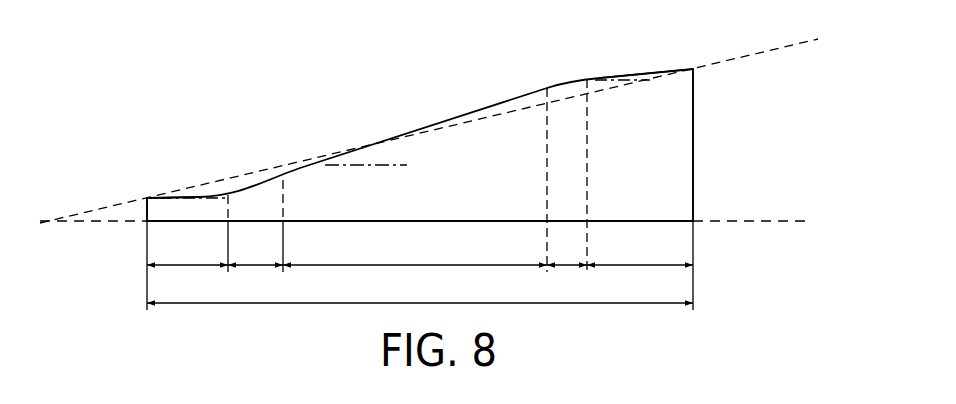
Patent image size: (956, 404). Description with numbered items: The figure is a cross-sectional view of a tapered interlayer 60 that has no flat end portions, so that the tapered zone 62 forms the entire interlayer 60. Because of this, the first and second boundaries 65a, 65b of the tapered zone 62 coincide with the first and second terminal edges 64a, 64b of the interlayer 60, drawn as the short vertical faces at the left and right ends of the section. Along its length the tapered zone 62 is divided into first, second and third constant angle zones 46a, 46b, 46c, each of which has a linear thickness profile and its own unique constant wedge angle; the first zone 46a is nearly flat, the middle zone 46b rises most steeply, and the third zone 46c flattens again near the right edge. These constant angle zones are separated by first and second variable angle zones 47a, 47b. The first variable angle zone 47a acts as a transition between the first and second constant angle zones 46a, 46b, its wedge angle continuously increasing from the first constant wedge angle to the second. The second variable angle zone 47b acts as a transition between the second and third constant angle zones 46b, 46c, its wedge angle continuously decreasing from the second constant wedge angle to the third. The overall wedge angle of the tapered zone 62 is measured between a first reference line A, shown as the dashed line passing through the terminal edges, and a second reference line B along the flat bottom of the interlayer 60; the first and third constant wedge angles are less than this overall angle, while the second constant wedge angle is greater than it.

The interlayer 60 is at (231, 117).
The tapered zone 62 is at (420, 290).
The first terminal edge 64a is at (147, 198).
The first boundary 65a is at (147, 221).
The second terminal edge 64b is at (693, 117).
The second boundary 65b is at (693, 163).
The first constant angle zone 46a is at (187, 252).
The first variable angle zone 47a is at (255, 252).
The second constant angle zone 46b is at (415, 252).
The second variable angle zone 47b is at (567, 267).
The third constant angle zone 46c is at (640, 252).
The first reference line A is at (758, 53).
The second reference line B is at (765, 221).